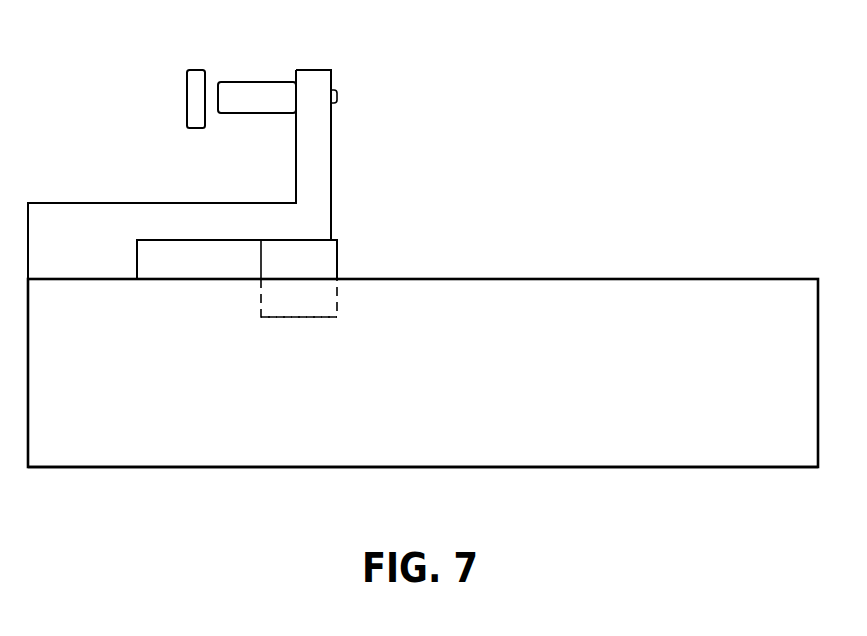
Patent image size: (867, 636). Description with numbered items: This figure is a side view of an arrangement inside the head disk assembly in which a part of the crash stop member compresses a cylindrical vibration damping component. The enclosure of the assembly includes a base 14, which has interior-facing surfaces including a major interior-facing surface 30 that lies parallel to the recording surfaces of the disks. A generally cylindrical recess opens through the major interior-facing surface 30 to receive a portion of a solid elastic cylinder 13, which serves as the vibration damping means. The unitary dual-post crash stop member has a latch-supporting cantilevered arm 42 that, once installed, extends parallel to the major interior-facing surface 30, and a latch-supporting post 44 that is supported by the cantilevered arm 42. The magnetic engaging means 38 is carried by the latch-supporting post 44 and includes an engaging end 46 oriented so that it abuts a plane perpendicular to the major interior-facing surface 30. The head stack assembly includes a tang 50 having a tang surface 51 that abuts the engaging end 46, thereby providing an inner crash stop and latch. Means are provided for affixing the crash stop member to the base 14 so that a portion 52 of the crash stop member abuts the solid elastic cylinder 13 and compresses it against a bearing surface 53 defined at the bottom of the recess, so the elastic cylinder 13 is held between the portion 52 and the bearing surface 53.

The solid elastic cylinder 13 is at (305, 302).
The base 14 is at (631, 450).
The major interior-facing surface 30 is at (584, 279).
The magnetic engaging means 38 is at (258, 82).
The latch-supporting cantilevered arm 42 is at (180, 210).
The latch-supporting post 44 is at (317, 138).
The engaging end 46 is at (196, 128).
The tang 50 is at (195, 68).
The tang surface 51 is at (209, 80).
The portion of dual-post unitary crash stop member 52 is at (337, 242).
The bearing surface 53 is at (273, 318).